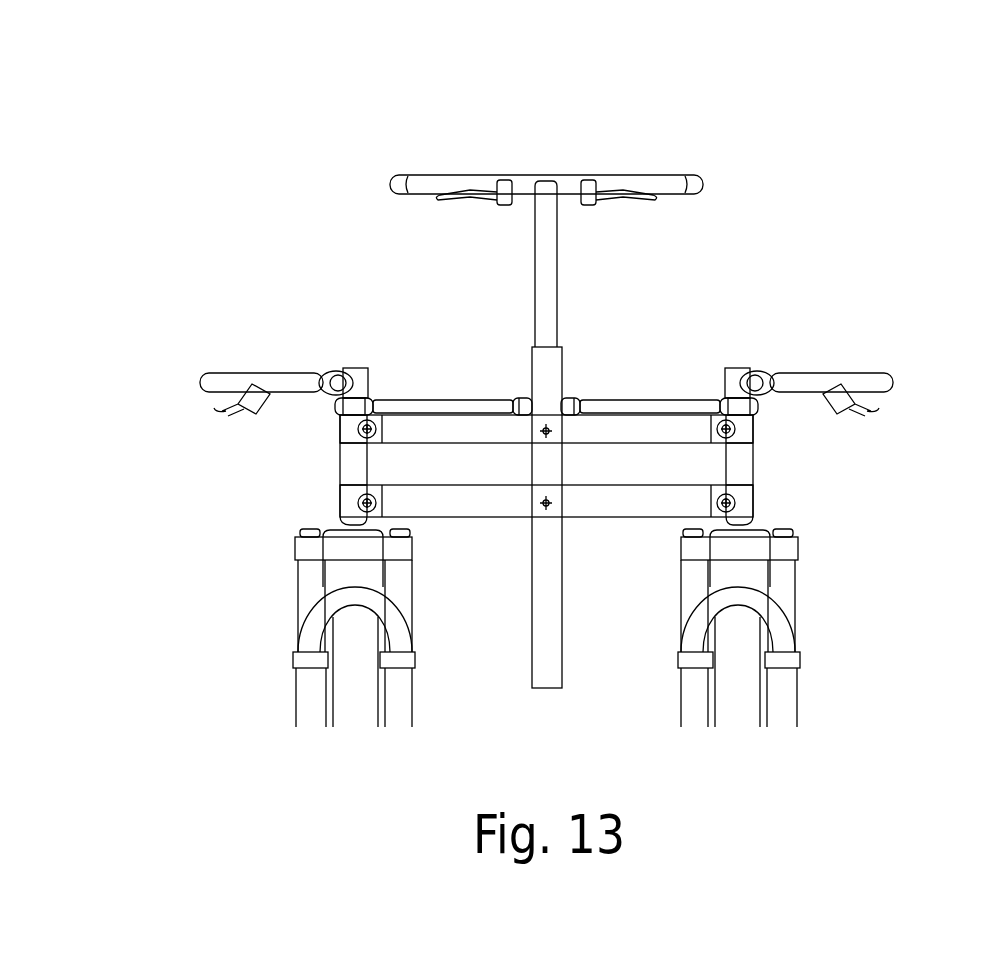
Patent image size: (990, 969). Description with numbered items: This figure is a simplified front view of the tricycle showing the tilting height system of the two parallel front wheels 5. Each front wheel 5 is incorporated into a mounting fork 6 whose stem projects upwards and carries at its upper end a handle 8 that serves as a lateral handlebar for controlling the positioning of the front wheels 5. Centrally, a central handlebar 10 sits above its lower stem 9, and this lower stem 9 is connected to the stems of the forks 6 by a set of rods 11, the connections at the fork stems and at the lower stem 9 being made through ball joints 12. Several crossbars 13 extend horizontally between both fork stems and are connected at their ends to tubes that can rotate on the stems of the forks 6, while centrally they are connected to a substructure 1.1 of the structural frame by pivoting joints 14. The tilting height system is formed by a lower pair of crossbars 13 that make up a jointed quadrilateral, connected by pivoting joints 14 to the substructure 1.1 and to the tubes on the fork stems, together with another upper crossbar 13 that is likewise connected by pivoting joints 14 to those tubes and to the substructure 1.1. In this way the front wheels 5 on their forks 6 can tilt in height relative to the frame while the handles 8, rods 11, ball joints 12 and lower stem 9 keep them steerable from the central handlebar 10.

The substructure 1.1 is at (547, 622).
The front wheel 5 is at (740, 680).
The mounting fork 6 is at (305, 698).
The handle 8 is at (212, 380).
The lower stem 9 is at (545, 262).
The central handlebar 10 is at (578, 180).
The rod 11 is at (450, 405).
The ball joint 12 is at (525, 403).
The crossbar 13 is at (645, 502).
The pivoting joint 14 is at (546, 432).